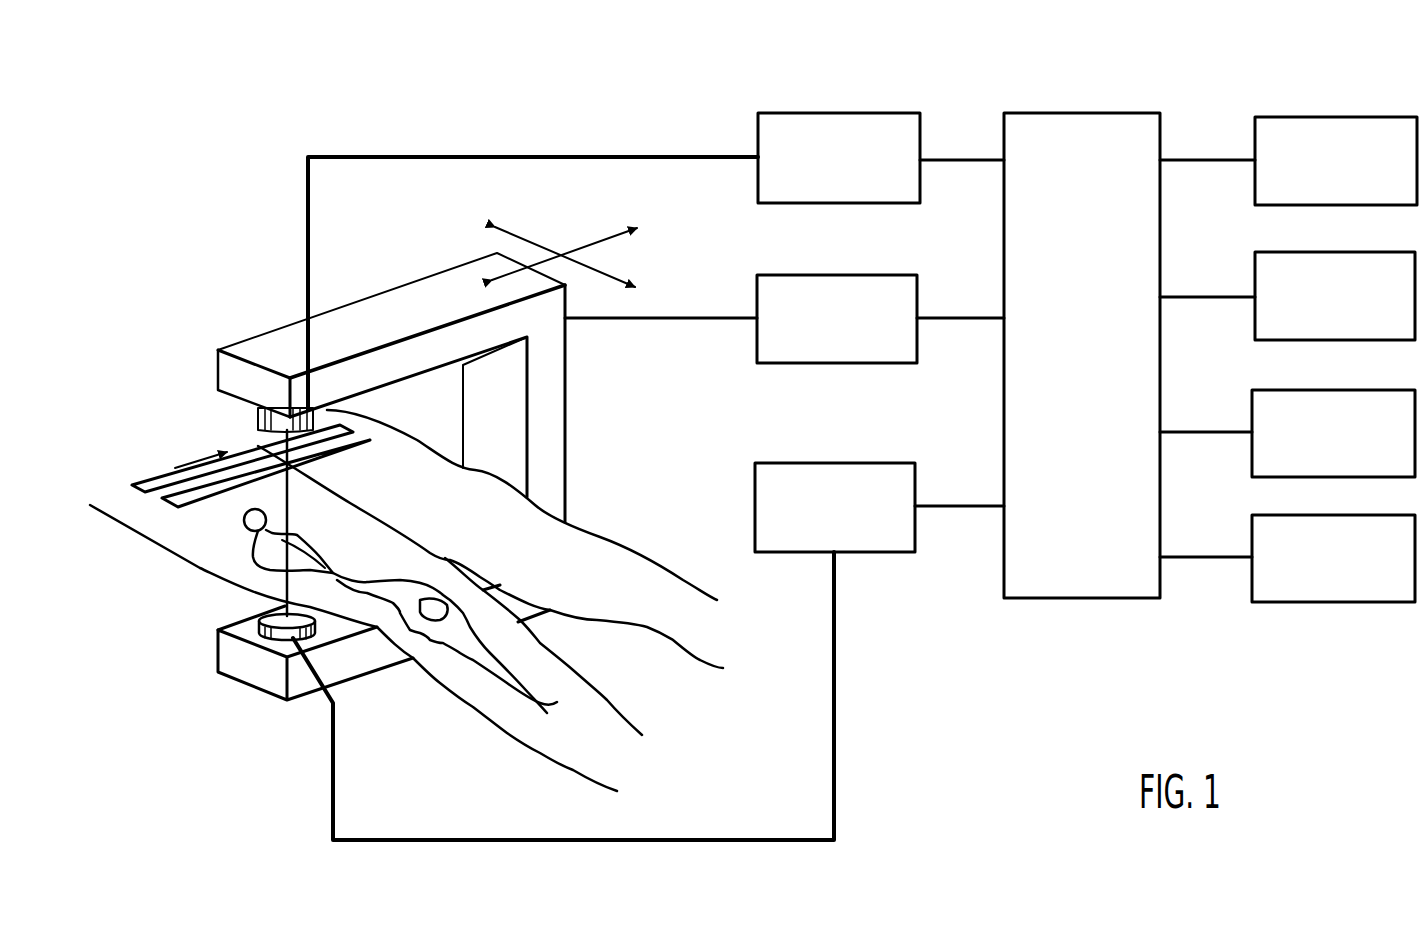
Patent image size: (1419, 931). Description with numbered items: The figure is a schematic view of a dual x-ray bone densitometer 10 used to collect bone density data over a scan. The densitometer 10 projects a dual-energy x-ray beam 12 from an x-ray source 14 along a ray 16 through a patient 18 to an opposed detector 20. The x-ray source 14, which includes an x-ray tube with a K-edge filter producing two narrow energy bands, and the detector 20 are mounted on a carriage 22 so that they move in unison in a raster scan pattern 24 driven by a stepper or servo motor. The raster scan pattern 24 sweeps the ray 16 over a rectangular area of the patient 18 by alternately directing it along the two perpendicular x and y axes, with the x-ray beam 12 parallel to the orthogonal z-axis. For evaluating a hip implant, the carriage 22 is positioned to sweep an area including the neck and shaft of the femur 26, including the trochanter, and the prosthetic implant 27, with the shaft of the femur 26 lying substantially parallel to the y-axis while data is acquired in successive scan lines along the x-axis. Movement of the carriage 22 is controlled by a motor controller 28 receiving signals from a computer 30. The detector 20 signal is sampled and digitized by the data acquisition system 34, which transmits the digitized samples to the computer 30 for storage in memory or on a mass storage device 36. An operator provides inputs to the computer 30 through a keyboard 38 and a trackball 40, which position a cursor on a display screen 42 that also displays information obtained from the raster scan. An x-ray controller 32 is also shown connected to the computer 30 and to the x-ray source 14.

The bone densitometer 10 is at (265, 127).
The dual-energy x-ray beam 12 is at (286, 600).
The x-ray source 14 is at (270, 638).
The ray 16 is at (275, 594).
The patient 18 is at (162, 557).
The detector 20 is at (258, 424).
The carriage 22 is at (445, 298).
The raster scan pattern 24 is at (170, 462).
The femur 26 is at (317, 552).
The prosthetic implant 27 is at (257, 542).
The motor controller 28 is at (838, 273).
The computer 30 is at (1085, 113).
The x-ray controller 32 is at (835, 462).
The data acquisition system 34 is at (840, 112).
The mass storage device 36 is at (1255, 117).
The keyboard 38 is at (1252, 390).
The trackball 40 is at (1252, 602).
The display screen 42 is at (1255, 252).